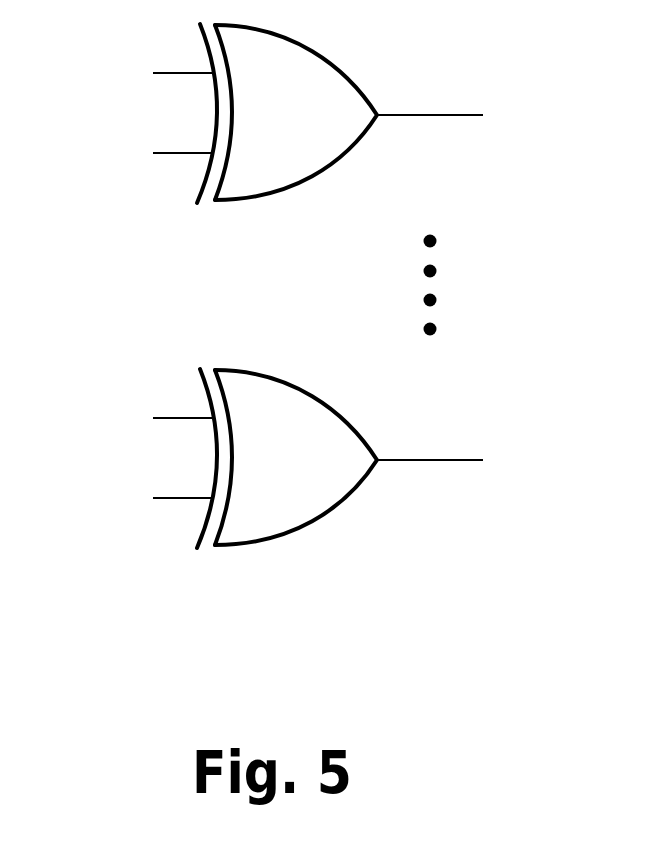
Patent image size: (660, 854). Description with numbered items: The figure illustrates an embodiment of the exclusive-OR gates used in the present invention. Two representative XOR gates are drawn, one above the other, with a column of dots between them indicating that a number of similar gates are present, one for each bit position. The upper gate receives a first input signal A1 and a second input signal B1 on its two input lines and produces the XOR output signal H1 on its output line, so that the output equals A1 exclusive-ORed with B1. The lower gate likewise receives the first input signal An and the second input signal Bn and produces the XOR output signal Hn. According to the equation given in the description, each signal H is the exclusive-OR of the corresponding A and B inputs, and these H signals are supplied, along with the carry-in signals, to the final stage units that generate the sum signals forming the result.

The first input signal A1 is at (132, 58).
The second input signal B1 is at (132, 156).
The XOR output signal H1 is at (475, 119).
The first input signal An is at (132, 400).
The second input signal Bn is at (132, 498).
The XOR output signal Hn is at (474, 461).